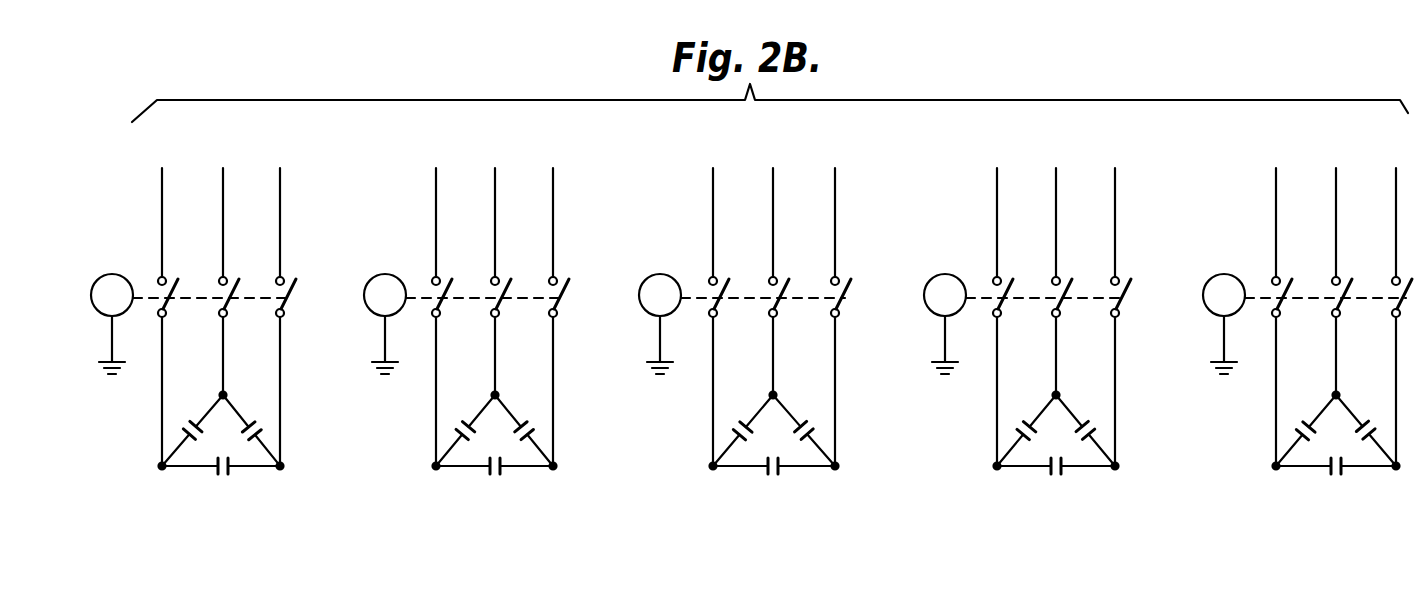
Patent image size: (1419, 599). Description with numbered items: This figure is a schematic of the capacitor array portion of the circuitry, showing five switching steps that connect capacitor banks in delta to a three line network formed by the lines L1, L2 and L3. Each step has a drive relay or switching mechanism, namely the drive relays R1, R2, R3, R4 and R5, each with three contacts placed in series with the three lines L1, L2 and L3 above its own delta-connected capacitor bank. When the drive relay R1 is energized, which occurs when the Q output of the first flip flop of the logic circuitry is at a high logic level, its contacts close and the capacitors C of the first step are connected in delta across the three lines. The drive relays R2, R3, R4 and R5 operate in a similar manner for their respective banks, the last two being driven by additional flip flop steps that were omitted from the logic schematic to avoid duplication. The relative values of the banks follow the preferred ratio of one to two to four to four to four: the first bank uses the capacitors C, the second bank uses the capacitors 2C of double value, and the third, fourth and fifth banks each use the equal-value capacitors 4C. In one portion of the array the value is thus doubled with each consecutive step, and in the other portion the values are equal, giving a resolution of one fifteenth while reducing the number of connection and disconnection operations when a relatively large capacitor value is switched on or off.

The drive relay R1 is at (40, 243).
The drive relay R2 is at (325, 243).
The drive relay R3 is at (593, 243).
The drive relay R4 is at (873, 243).
The drive relay R5 is at (1152, 243).
The line L1 is at (720, 302).
The line L2 is at (780, 266).
The line L3 is at (839, 302).
The capacitors C is at (221, 447).
The capacitors 2C is at (495, 447).
The capacitors 4C is at (1054, 447).